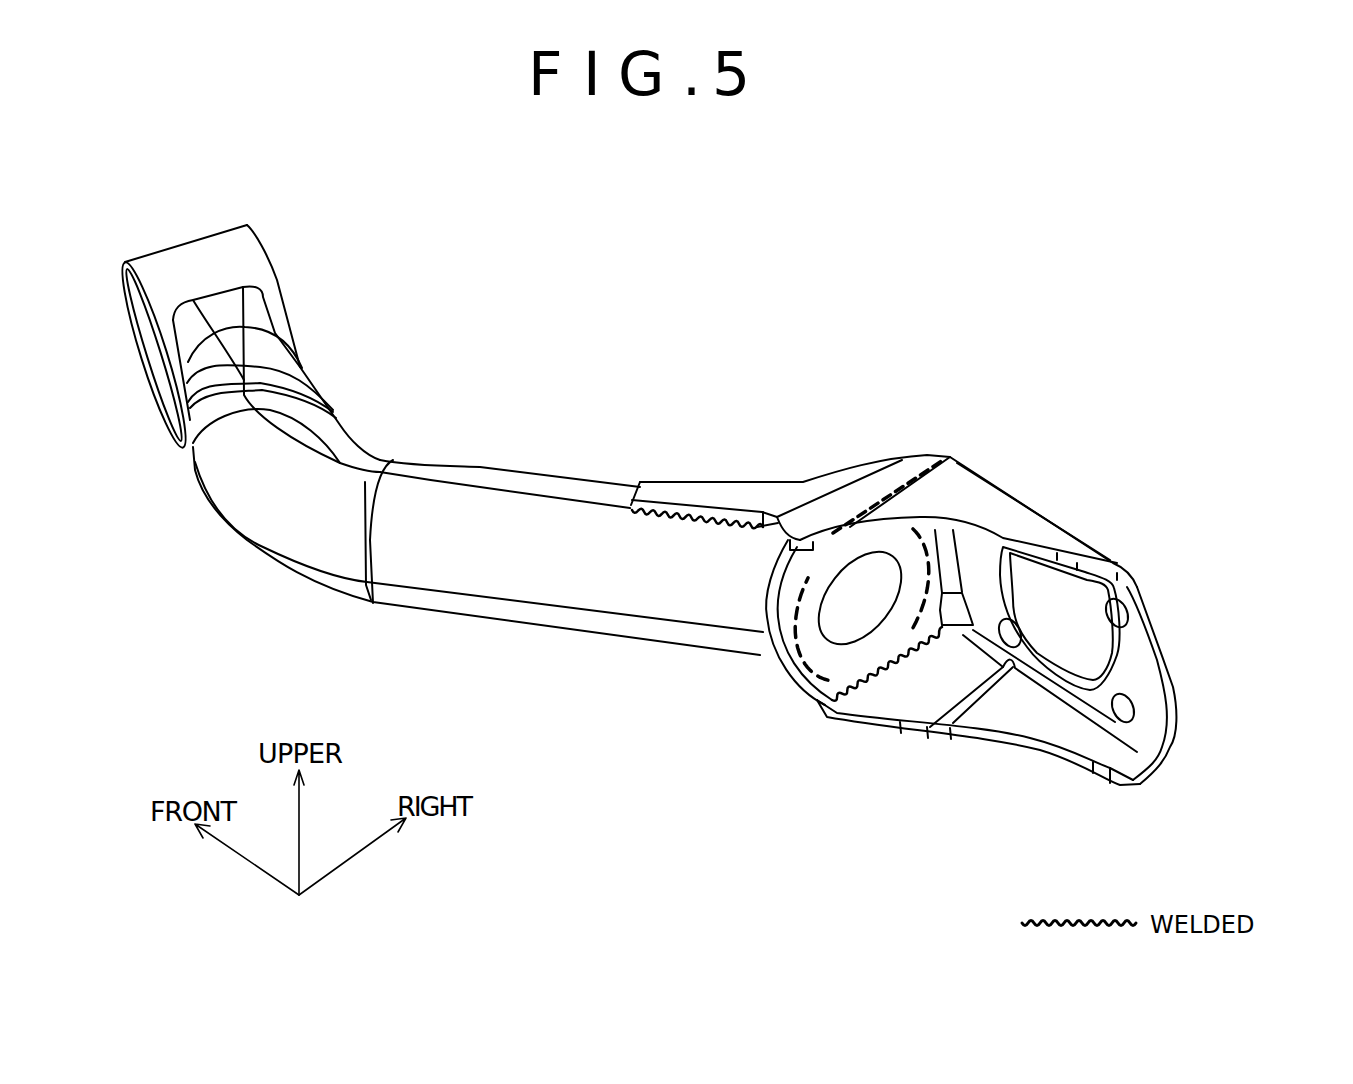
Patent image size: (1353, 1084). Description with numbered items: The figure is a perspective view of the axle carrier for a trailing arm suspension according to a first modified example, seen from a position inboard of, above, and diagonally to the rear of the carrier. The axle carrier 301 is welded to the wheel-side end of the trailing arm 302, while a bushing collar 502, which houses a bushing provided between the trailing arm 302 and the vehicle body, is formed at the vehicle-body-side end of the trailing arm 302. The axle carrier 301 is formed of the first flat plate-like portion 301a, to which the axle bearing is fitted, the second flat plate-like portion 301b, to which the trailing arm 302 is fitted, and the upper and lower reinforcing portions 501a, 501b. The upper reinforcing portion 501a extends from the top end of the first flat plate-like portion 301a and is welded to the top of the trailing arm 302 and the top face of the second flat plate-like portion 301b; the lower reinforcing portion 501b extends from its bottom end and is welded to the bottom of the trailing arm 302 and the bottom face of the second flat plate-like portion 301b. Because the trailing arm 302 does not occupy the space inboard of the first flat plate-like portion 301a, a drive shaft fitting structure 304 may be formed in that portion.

The bushing collar 502 is at (186, 252).
The trailing arm 302 is at (222, 497).
The axle carrier 301 is at (976, 575).
The first flat plate-like portion 301a is at (1143, 681).
The second flat plate-like portion 301b is at (813, 652).
The drive shaft fitting structure 304 is at (1091, 629).
The upper reinforcing portion 501a is at (737, 490).
The lower reinforcing portion 501b is at (1005, 708).